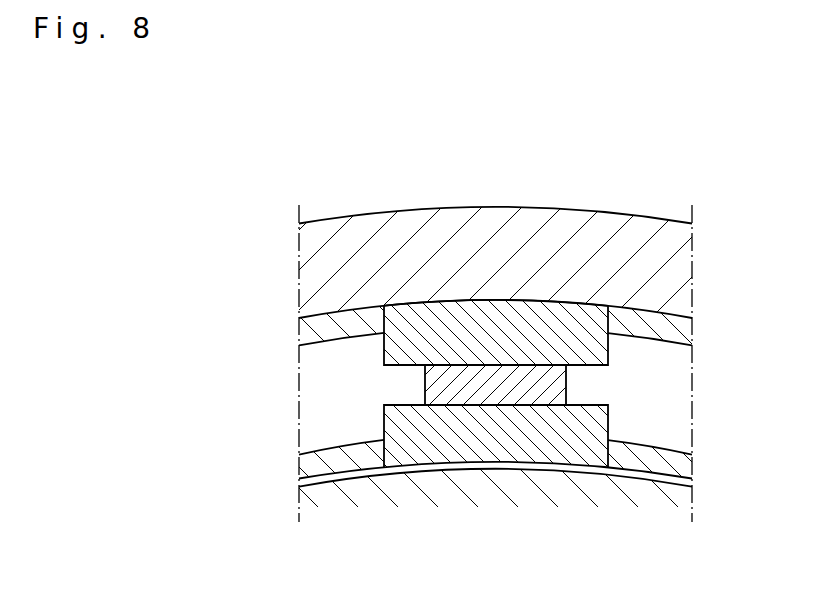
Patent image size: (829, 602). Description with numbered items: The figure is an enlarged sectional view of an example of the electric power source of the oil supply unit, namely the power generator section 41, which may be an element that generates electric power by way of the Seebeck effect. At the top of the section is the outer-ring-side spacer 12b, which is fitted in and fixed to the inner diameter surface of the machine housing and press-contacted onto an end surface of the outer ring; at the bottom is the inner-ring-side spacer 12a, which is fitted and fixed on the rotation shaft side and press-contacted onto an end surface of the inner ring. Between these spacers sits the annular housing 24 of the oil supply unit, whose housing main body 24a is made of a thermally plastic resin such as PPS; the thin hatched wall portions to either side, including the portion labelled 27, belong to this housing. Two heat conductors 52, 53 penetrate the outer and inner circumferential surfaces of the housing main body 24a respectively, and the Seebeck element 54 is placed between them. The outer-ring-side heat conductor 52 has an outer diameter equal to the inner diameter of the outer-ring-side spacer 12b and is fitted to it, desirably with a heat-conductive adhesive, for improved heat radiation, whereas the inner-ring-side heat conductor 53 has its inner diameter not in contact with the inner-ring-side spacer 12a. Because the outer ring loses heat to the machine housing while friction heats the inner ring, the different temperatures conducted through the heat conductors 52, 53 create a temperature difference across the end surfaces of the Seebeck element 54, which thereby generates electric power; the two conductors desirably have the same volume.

The inner-ring-side spacer 12a is at (665, 494).
The outer-ring-side spacer 12b is at (668, 276).
The annular housing 24 is at (637, 337).
The housing main body 24a is at (335, 463).
The spacer portion 27 is at (358, 318).
The power generator section 41 is at (495, 301).
The heat conductor 52 is at (555, 317).
The heat conductor 53 is at (536, 447).
The Seebeck element 54 is at (440, 390).